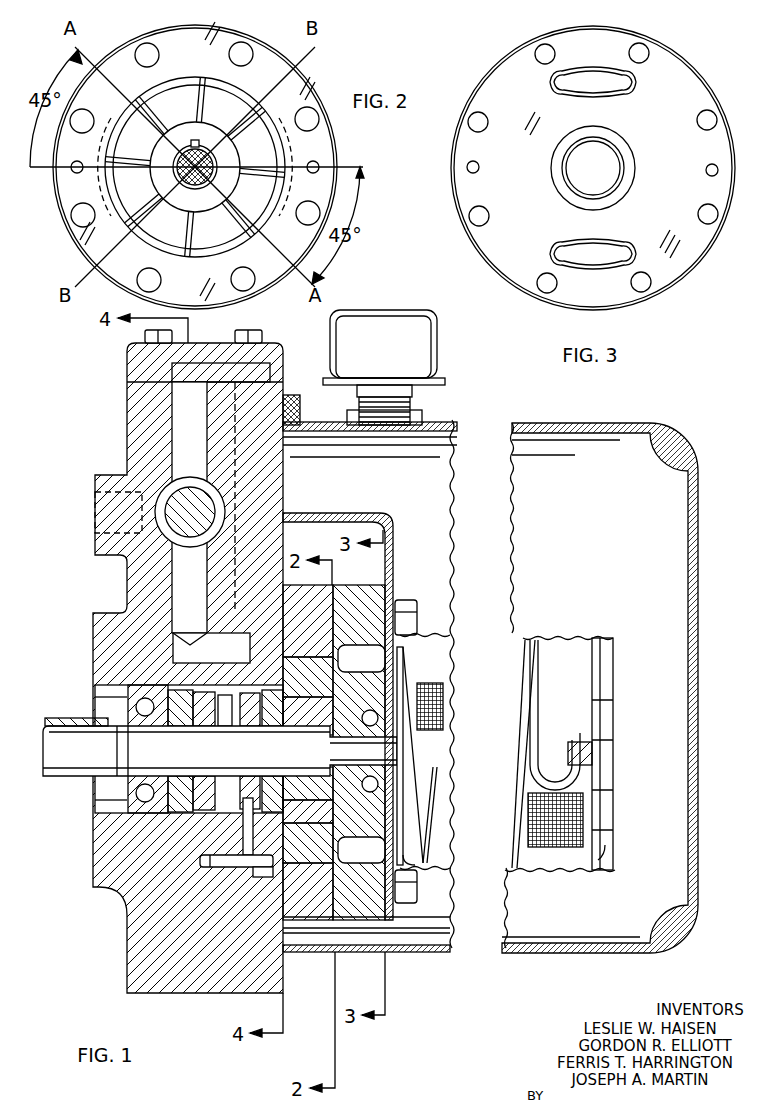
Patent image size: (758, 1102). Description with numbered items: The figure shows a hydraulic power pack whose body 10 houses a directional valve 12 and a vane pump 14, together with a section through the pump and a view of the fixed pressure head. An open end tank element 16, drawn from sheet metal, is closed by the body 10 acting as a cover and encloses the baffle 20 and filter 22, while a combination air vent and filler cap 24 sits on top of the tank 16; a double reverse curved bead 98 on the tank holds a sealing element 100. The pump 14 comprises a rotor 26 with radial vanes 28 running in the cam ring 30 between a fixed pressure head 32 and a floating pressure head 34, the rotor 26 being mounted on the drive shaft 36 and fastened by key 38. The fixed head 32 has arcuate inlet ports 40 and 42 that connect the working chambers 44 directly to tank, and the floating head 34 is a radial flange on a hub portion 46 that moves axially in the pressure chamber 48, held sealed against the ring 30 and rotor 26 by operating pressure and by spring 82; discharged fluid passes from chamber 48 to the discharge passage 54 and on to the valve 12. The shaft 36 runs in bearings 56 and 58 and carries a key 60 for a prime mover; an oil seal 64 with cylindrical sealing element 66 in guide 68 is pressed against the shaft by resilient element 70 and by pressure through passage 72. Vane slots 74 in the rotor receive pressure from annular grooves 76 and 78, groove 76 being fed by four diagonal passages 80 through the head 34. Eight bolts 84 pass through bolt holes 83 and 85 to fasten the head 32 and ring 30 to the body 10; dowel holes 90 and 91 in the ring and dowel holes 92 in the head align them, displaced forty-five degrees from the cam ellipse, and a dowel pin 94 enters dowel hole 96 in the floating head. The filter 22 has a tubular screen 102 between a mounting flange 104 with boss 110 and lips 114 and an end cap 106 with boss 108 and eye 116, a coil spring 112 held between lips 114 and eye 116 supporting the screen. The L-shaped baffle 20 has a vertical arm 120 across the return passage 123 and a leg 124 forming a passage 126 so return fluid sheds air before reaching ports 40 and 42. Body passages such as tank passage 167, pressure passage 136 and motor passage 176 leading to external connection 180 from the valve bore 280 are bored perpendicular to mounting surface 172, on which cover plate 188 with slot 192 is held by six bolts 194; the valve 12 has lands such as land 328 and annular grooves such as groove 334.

In FIG. 1, the body 10 is at (188, 668).
In FIG. 1, the valve 12 is at (190, 512).
In FIG. 1, the pump 14 is at (342, 583).
In FIG. 1, the tank element 16 is at (570, 526).
In FIG. 1, the baffle 20 is at (350, 513).
In FIG. 1, the filter 22 is at (552, 686).
In FIG. 1, the combination air vent and filler cap 24 is at (398, 375).
In FIG. 1, the rotor 26 is at (308, 713).
In FIG. 2, the rotor 26 is at (178, 214).
In FIG. 2, the radial vanes 28 is at (240, 178).
In FIG. 1, the cam ring 30 is at (308, 752).
In FIG. 2, the cam ring 30 is at (195, 165).
In FIG. 1, the fixed pressure head 32 is at (359, 752).
In FIG. 3, the fixed pressure head 32 is at (593, 168).
In FIG. 2, the floating pressure head 34 is at (140, 95).
In FIG. 1, the drive shaft 36 is at (76, 735).
In FIG. 1, the key 38 is at (320, 745).
In FIG. 1, the arcuate axial inlet port 40 is at (361, 658).
In FIG. 3, the arcuate axial inlet port 40 is at (597, 78).
In FIG. 1, the arcuate axial inlet port 42 is at (361, 850).
In FIG. 3, the arcuate axial inlet port 42 is at (600, 244).
In FIG. 1, the pump working chamber 44 is at (308, 764).
In FIG. 2, the pump working chamber 44 is at (190, 75).
In FIG. 1, the hub portion 46 is at (253, 751).
In FIG. 1, the pressure chamber 48 is at (246, 832).
In FIG. 1, the discharge passage 54 is at (211, 648).
In FIG. 1, the bearing 56 is at (128, 800).
In FIG. 1, the bearing 58 is at (368, 710).
In FIG. 1, the key 60 is at (100, 722).
In FIG. 1, the oil seal 64 is at (182, 690).
In FIG. 1, the cylindrical sealing element 66 is at (175, 751).
In FIG. 1, the guide 68 is at (172, 765).
In FIG. 1, the resilient element 70 is at (205, 751).
In FIG. 1, the passage 72 is at (208, 802).
In FIG. 2, the radial vane slots 74 is at (195, 189).
In FIG. 1, the annular groove 76 is at (308, 785).
In FIG. 1, the annular groove 78 is at (308, 813).
In FIG. 2, the annular groove 78 is at (117, 167).
In FIG. 1, the diagonal passages 80 is at (252, 695).
In FIG. 1, the spring 82 is at (240, 705).
In FIG. 2, the bolt holes 83 is at (250, 57).
In FIG. 1, the bolts 84 is at (416, 618).
In FIG. 3, the bolt holes 85 is at (540, 58).
In FIG. 2, the dowel hole 90 is at (80, 173).
In FIG. 2, the dowel hole 91 is at (313, 173).
In FIG. 3, the dowel holes 92 is at (478, 165).
In FIG. 1, the dowel pin 94 is at (228, 866).
In FIG. 1, the dowel hole 96 is at (264, 877).
In FIG. 1, the double reverse curved bead or flange 98 is at (290, 395).
In FIG. 1, the sealing element 100 is at (300, 416).
In FIG. 1, the tubular screen 102 is at (445, 705).
In FIG. 1, the mounting flange 104 is at (395, 930).
In FIG. 1, the end cap 106 is at (613, 795).
In FIG. 1, the boss 108 is at (610, 862).
In FIG. 1, the boss 110 is at (397, 870).
In FIG. 1, the coil spring 112 is at (436, 792).
In FIG. 1, the lips 114 is at (425, 860).
In FIG. 1, the eye 116 is at (592, 752).
In FIG. 1, the vertical arm 120 is at (394, 549).
In FIG. 1, the tank return passage 123 is at (245, 572).
In FIG. 1, the leg 124 is at (305, 513).
In FIG. 1, the passage 126 is at (393, 530).
In FIG. 1, the pressure passage 136 is at (188, 507).
In FIG. 1, the tank passage 167 is at (250, 496).
In FIG. 1, the mounting surface 172 is at (127, 382).
In FIG. 1, the motor passage 176 is at (165, 535).
In FIG. 1, the external connection 180 is at (100, 513).
In FIG. 1, the cover plate 188 is at (205, 366).
In FIG. 1, the slot 192 is at (205, 375).
In FIG. 1, the bolts 194 is at (145, 337).
In FIG. 1, the valve bore 280 is at (222, 490).
In FIG. 1, the land 328 is at (225, 512).
In FIG. 1, the annular groove 334 is at (178, 490).